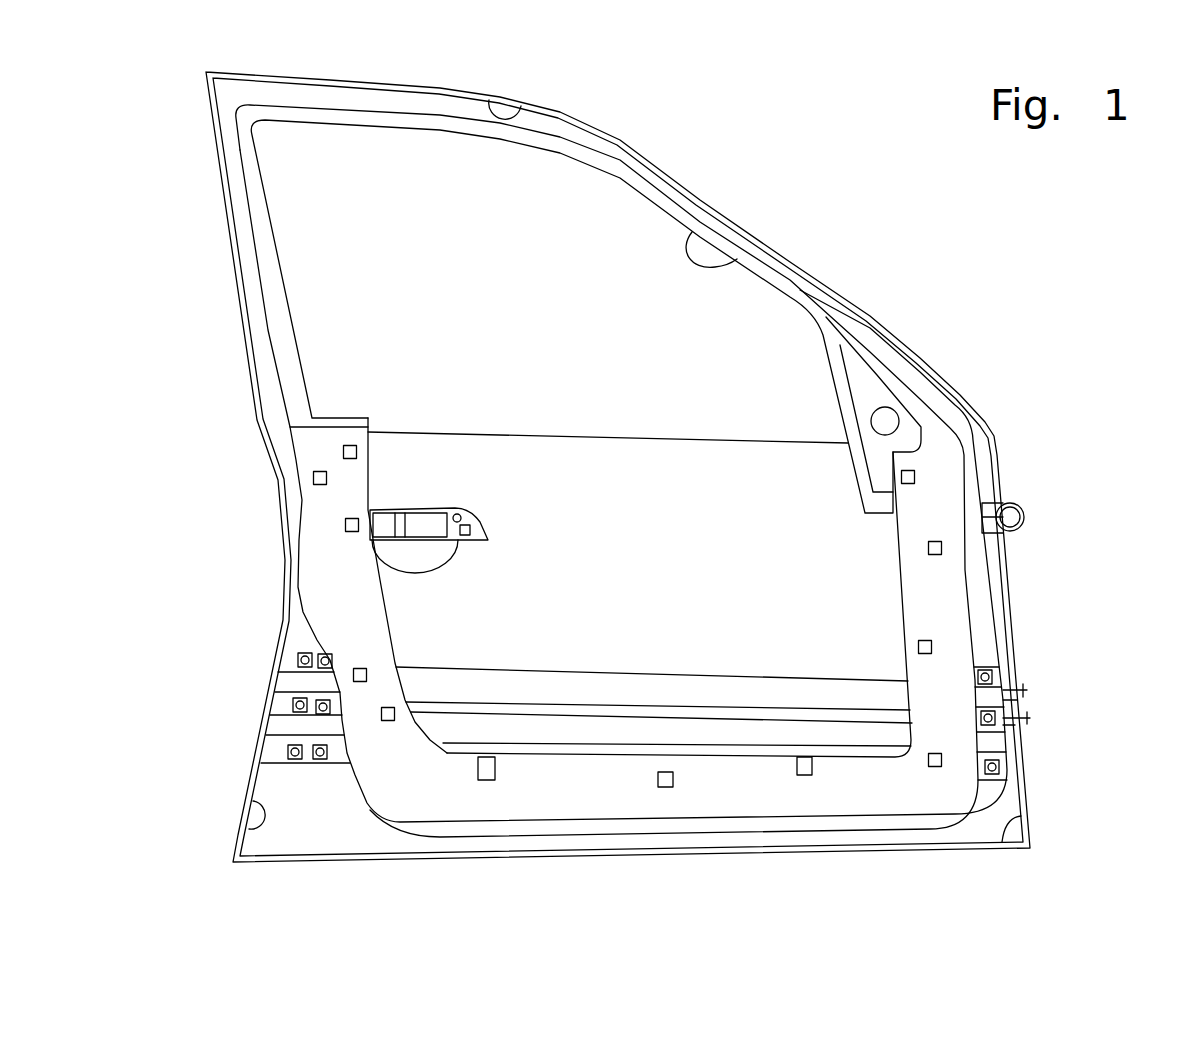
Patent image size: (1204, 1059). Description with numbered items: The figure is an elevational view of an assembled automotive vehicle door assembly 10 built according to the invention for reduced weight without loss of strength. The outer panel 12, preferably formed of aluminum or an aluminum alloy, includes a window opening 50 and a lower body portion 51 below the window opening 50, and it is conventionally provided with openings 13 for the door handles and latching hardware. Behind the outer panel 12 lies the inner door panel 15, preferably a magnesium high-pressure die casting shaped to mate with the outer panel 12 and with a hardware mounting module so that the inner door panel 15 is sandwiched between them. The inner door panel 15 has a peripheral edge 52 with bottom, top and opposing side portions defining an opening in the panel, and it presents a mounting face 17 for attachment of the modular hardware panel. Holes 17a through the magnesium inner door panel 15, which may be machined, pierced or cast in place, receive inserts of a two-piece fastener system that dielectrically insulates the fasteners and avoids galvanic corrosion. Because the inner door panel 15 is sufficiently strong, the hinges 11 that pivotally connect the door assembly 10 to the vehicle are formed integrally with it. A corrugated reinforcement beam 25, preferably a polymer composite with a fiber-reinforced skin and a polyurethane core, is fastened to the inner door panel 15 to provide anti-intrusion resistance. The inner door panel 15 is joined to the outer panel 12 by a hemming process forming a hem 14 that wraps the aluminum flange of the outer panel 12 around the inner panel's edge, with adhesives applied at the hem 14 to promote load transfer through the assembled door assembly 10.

The automotive vehicle door assembly 10 is at (749, 125).
The hinges 11 is at (988, 500).
The outer panel 12 is at (840, 300).
The openings 13 is at (450, 560).
The hem 14 is at (510, 110).
The inner door panel 15 is at (388, 621).
The mounting face 17 is at (918, 577).
The holes 17a is at (327, 478).
The reinforcement beam 25 is at (583, 670).
The window opening 50 is at (742, 252).
The lower body portion 51 is at (618, 428).
The peripheral edge 52 is at (897, 593).